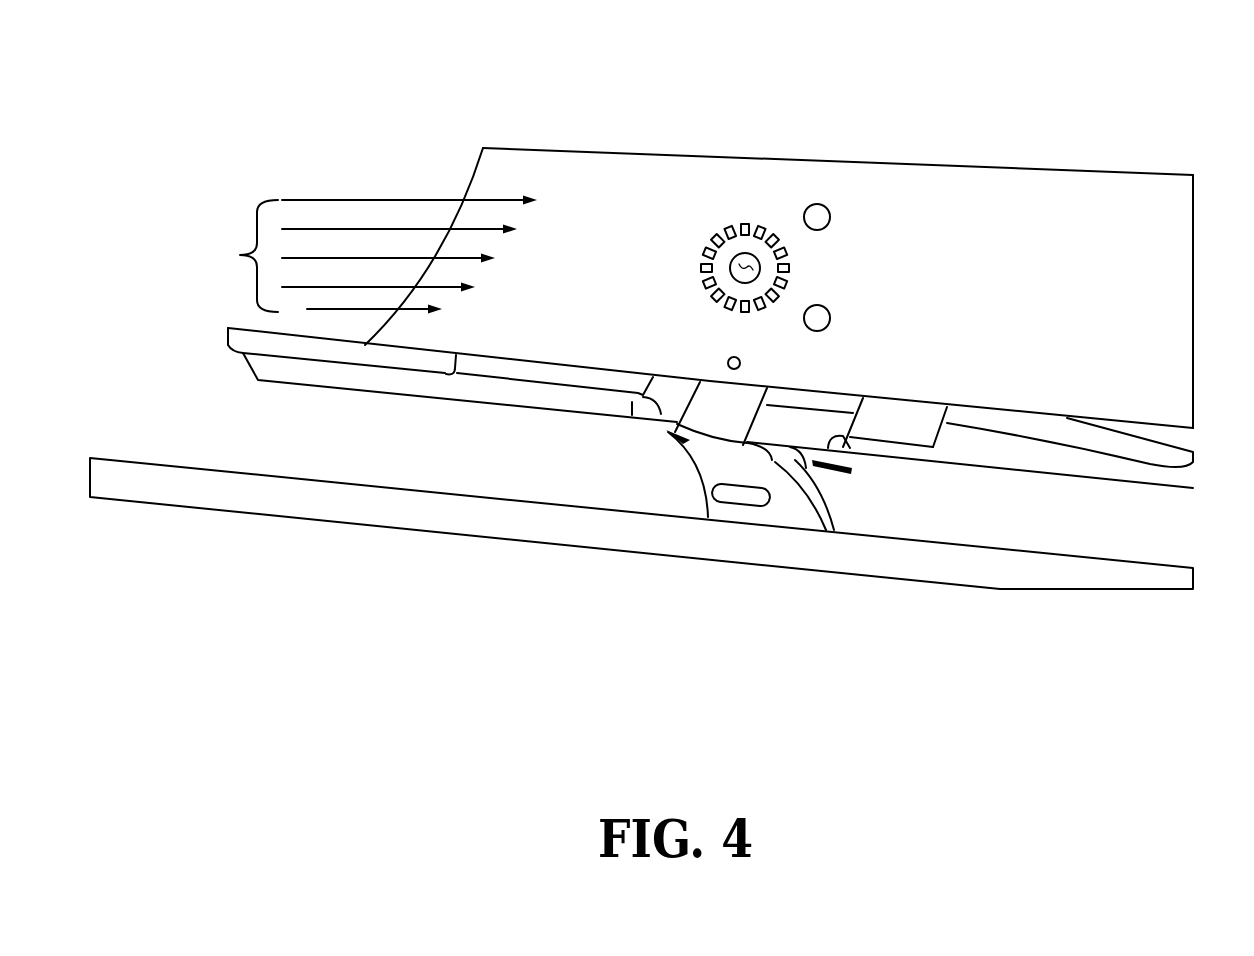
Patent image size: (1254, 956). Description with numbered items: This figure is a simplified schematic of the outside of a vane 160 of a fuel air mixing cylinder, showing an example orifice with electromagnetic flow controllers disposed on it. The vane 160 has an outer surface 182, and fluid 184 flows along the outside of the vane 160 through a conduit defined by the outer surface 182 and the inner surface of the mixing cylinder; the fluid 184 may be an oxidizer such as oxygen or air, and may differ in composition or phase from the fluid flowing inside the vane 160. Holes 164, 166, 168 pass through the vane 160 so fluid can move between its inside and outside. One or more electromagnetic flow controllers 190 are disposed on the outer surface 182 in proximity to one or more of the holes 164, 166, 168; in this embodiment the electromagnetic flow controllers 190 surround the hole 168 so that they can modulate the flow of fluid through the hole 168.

The vane 160 is at (520, 136).
The hole 164 is at (817, 217).
The hole 166 is at (817, 318).
The hole 168 is at (738, 262).
The outer surface 182 is at (1077, 258).
The fluid 184 is at (369, 255).
The electromagnetic flow controller 190 is at (749, 204).